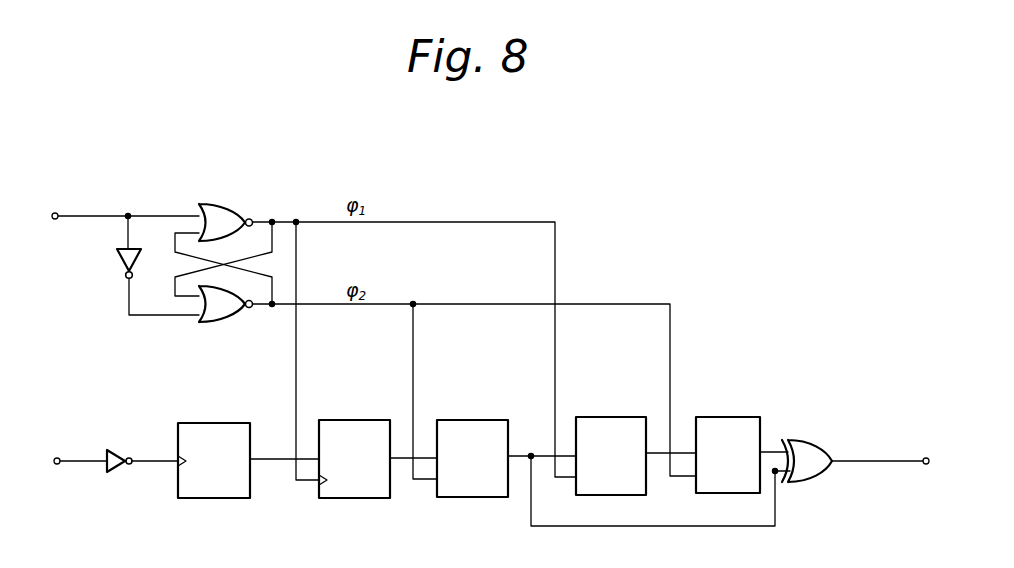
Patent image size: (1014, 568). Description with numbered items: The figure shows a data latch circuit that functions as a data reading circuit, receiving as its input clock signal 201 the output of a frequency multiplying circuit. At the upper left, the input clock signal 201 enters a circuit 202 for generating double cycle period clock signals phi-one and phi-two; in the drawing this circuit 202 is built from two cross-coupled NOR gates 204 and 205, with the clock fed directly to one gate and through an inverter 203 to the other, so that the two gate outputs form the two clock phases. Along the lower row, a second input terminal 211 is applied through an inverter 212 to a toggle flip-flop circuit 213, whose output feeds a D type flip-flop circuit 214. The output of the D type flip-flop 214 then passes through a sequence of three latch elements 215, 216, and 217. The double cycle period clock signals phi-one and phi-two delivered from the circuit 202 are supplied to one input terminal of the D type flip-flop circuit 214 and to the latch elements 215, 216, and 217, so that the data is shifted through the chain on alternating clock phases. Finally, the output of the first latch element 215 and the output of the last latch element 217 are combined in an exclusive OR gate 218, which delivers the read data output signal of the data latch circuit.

The input clock signal 201 is at (55, 219).
The double cycle period clock signal generating circuit 202 is at (230, 234).
The inverter 203 is at (123, 264).
The NOR gate 204 is at (233, 207).
The NOR gate 205 is at (240, 324).
The input terminal S 211 is at (57, 464).
The inverter 212 is at (118, 450).
The toggle flip-flop circuit 213 is at (217, 423).
The D type flip-flop circuit 214 is at (351, 420).
The latch element 215 is at (471, 420).
The latch element 216 is at (600, 417).
The latch element 217 is at (722, 417).
The exclusive OR gate 218 is at (813, 440).